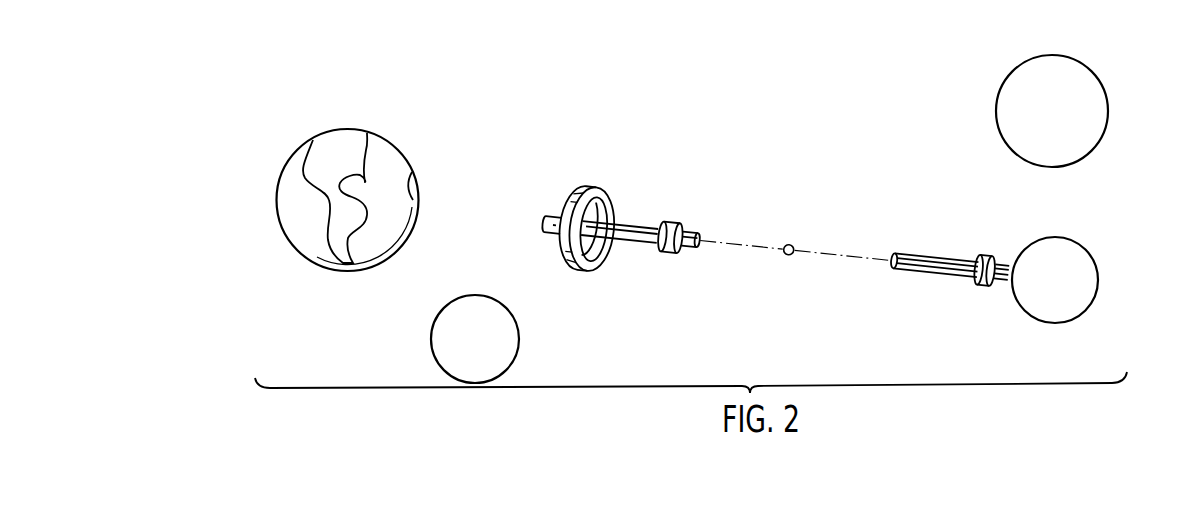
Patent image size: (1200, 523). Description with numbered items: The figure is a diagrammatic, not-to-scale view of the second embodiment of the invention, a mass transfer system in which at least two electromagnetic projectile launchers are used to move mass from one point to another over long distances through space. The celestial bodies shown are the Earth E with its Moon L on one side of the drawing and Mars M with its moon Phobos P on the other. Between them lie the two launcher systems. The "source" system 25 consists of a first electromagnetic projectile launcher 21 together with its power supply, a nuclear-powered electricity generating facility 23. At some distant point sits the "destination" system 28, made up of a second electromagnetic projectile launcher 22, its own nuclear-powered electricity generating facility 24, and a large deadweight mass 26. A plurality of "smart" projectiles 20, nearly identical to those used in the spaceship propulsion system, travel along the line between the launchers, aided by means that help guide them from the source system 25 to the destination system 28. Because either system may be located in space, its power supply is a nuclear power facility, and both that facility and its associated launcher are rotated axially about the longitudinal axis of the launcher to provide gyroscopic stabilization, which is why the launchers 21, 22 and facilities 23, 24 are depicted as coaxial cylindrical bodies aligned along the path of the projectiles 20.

The projectiles 20 is at (794, 250).
The electromagnetic projectile launcher 21 is at (934, 265).
The electromagnetic projectile launcher 22 is at (619, 232).
The nuclear-powered electricity generating facility 23 is at (991, 270).
The nuclear-powered electricity generating facility 24 is at (679, 238).
The source system 25 is at (934, 265).
The large deadweight mass 26 is at (587, 228).
The destination system 28 is at (775, 219).
The Earth E is at (281, 152).
The Mars M is at (1110, 80).
The Phobos P is at (1102, 255).
The Moon L is at (426, 338).